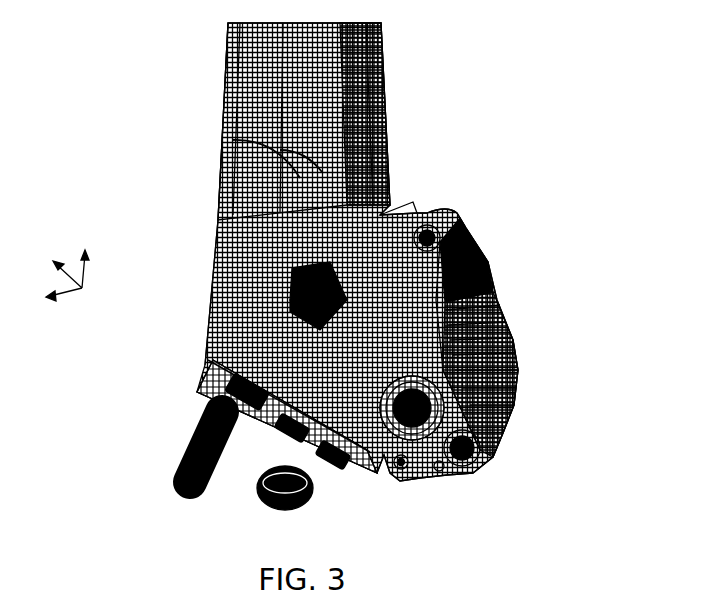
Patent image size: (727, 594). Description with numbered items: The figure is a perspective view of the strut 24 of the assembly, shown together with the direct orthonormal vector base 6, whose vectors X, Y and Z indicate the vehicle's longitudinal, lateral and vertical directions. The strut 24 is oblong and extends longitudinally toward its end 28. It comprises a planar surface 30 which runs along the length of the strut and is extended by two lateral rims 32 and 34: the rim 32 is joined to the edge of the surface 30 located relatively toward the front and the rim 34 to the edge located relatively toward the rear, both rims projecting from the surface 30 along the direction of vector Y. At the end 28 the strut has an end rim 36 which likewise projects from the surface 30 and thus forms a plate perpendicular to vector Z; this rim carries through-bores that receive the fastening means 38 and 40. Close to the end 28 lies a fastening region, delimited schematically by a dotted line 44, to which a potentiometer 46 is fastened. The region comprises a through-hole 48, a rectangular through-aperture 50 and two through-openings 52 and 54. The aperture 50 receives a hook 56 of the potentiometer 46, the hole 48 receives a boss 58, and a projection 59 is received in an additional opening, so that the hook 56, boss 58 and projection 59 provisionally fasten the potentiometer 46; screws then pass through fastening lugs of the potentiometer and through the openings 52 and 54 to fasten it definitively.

The direct orthonormal vector base 6 is at (49, 306).
The strut 24 is at (603, 300).
The end 28 is at (358, 480).
The planar surface 30 is at (313, 58).
The lateral rim 32 is at (222, 199).
The lateral rim 34 is at (372, 102).
The end rim 36 is at (200, 383).
The fastening means 38 is at (210, 363).
The fastening means 40 is at (277, 504).
The dotted line 44 is at (232, 138).
The potentiometer 46 is at (485, 315).
The through-hole 48 is at (439, 471).
The rectangular through-aperture 50 is at (290, 325).
The through-opening 52 is at (440, 235).
The through-opening 54 is at (490, 460).
The hook 56 is at (292, 268).
The boss 58 is at (517, 405).
The projection 59 is at (401, 482).